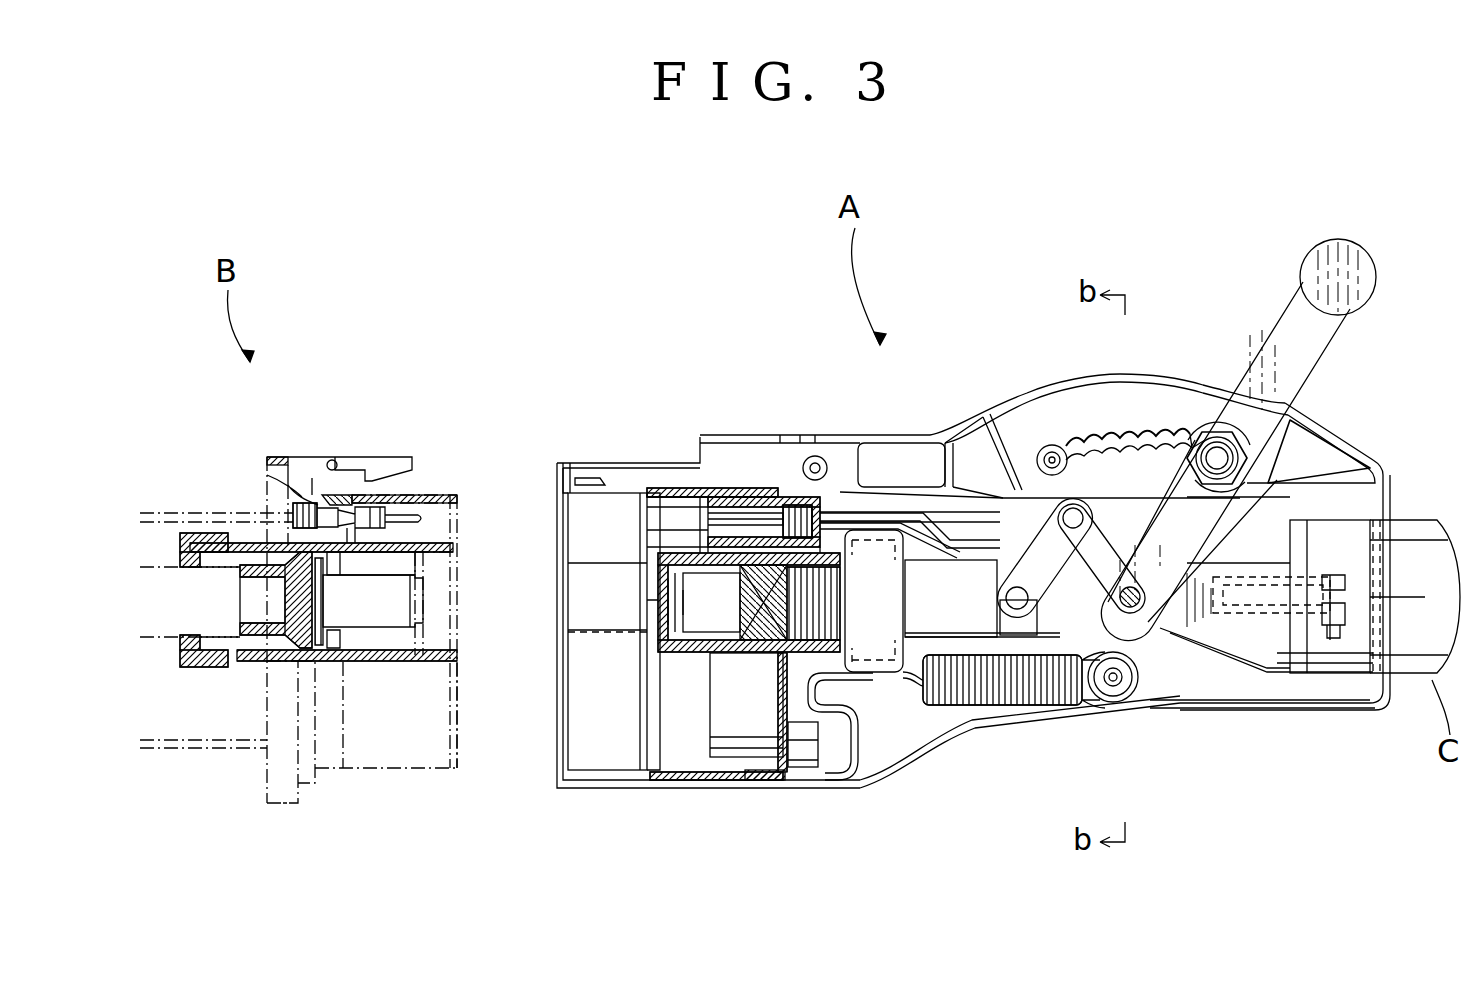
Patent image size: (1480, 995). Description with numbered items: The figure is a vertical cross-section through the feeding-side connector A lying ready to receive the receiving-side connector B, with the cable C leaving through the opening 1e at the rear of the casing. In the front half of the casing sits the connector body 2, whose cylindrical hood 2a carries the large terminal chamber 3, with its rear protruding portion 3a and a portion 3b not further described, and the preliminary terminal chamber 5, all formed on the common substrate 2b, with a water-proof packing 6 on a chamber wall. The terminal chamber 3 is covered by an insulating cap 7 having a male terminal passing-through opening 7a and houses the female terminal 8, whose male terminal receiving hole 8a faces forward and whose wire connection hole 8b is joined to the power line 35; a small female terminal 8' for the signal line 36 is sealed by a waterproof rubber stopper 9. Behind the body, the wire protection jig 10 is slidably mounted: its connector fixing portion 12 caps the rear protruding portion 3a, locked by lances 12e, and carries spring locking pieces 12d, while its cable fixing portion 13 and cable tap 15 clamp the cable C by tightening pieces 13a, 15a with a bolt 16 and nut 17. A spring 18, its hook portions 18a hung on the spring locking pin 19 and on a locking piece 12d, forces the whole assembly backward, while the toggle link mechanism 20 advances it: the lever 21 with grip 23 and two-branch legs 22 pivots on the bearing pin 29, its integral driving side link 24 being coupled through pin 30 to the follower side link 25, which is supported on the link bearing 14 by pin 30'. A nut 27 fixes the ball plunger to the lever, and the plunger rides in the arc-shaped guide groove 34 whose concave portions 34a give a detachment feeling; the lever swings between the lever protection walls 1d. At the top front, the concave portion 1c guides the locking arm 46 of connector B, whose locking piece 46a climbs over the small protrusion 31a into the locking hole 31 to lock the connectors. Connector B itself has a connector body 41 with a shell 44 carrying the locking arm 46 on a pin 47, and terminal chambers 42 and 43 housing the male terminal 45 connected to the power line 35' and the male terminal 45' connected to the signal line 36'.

The concave portion 1c is at (637, 436).
The lever protection walls 1d is at (1058, 400).
The opening 1e is at (1390, 510).
The connector body 2 is at (645, 748).
The cylindrical hood 2a is at (655, 782).
The common substrate 2b is at (810, 770).
The large terminal chamber 3 is at (700, 560).
The rear protruding portion 3a is at (790, 685).
The inner housing block 3b is at (945, 605).
The preliminary terminal chamber 5 is at (730, 770).
The water-proof packing 6 is at (758, 488).
The insulating cap 7 is at (655, 655).
The male terminal passing-through opening 7a is at (655, 600).
The female terminal 8 is at (726, 647).
The small-sized female terminal 8' is at (733, 465).
The male terminal receiving hole 8a is at (700, 575).
The wire connection hole 8b is at (820, 606).
The waterproof rubber stopper 9 is at (800, 500).
The wire protection jig 10 is at (1238, 706).
The connector fixing portion 12 is at (965, 715).
The spring locking piece 12d is at (895, 740).
The lance 12e is at (901, 465).
The cable fixing portion 13 is at (1325, 660).
The tightening piece 13a is at (1388, 670).
The link bearing 14 is at (1030, 620).
The cable tap 15 is at (1355, 525).
The tightening piece 15a is at (1370, 580).
The bolt 16 is at (1335, 525).
The nut 17 is at (1335, 645).
The spring 18 is at (1000, 705).
The hook portion 18a is at (1138, 700).
The spring locking pin 19 is at (1113, 686).
The toggle link mechanism 20 is at (1262, 336).
The lever 21 is at (1310, 365).
The two-branch legs 22 is at (1190, 552).
The grip 23 is at (1358, 280).
The driving side link 24 is at (1075, 540).
The follower side link 25 is at (1025, 575).
The nut 27 is at (1210, 440).
The bearing pin 29 is at (1138, 606).
The pin 30 is at (912, 448).
The pin 30' is at (975, 586).
The locking hole 31 is at (585, 465).
The small protrusion 31a is at (585, 478).
The arc-shaped guide groove 34 is at (1112, 432).
The concave portion 34a is at (1165, 440).
The power line 35 is at (833, 436).
The signal line 36 is at (954, 438).
The power line 35' is at (185, 642).
The signal line 36' is at (216, 574).
The connector body 41 is at (262, 795).
The terminal chamber 42 is at (430, 530).
The terminal chamber 43 is at (385, 500).
The shell 44 is at (438, 488).
The male terminal 45 is at (373, 661).
The male terminal 45' is at (265, 523).
The locking arm 46 is at (355, 452).
The locking piece 46a is at (378, 500).
The pin 47 is at (330, 460).